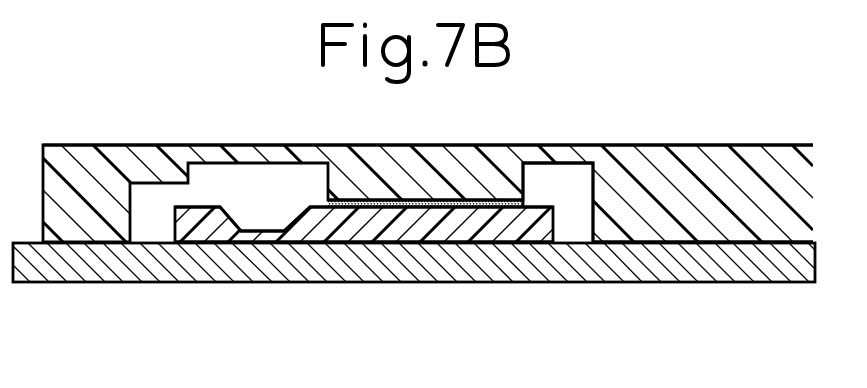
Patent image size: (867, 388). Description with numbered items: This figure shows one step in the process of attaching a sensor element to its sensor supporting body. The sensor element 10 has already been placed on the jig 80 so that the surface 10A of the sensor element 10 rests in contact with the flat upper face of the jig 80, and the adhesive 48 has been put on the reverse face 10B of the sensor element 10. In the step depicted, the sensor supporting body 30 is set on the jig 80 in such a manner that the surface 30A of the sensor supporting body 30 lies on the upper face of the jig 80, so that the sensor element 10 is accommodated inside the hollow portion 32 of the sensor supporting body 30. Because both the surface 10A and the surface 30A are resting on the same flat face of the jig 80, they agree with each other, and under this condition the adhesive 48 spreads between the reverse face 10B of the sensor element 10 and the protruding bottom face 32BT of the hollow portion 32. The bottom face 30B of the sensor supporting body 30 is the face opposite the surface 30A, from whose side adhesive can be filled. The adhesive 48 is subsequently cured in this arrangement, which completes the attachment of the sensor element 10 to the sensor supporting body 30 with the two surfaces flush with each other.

The sensor element 10 is at (208, 205).
The surface of the sensor element 10A is at (317, 243).
The reverse face of the sensor element 10B is at (332, 200).
The adhesive 48 is at (413, 200).
The bottom face of the hollow portion 32BT is at (473, 214).
The hollow portion 32 is at (576, 180).
The sensor supporting body 30 is at (776, 144).
The bottom face of the supporting body 30B is at (688, 144).
The surface of the supporting body 30A is at (623, 243).
The jig 80 is at (752, 283).